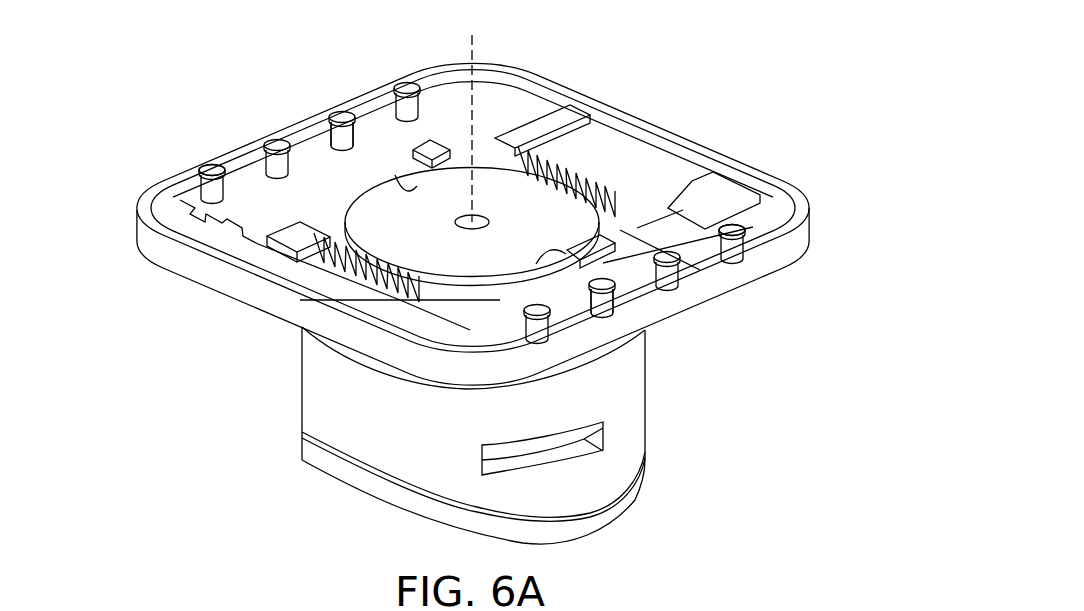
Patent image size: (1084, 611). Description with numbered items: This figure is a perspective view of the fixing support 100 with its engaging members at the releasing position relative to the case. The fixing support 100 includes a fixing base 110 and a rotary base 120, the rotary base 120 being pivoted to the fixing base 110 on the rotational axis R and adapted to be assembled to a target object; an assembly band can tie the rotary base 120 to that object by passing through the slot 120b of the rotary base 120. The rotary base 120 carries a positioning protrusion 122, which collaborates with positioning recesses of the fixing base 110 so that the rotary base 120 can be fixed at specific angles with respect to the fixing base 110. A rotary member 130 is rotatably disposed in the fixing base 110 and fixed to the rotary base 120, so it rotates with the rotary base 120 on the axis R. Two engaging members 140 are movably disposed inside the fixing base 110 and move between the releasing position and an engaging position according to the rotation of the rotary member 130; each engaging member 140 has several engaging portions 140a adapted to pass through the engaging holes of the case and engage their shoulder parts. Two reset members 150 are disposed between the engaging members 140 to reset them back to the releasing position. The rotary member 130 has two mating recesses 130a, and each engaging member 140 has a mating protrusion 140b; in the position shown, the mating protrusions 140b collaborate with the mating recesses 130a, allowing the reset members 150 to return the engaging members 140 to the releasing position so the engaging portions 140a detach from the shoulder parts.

The fixing support 100 is at (487, 280).
The fixing base 110 is at (753, 177).
The rotary base 120 is at (623, 380).
The slot 120b is at (590, 437).
The positioning protrusion 122 is at (630, 490).
The rotary member 130 is at (530, 190).
The mating recess 130a is at (633, 200).
The engaging member 140 is at (257, 180).
The engaging portion 140a is at (212, 165).
The mating protrusion 140b is at (363, 177).
The reset member 150 is at (557, 163).